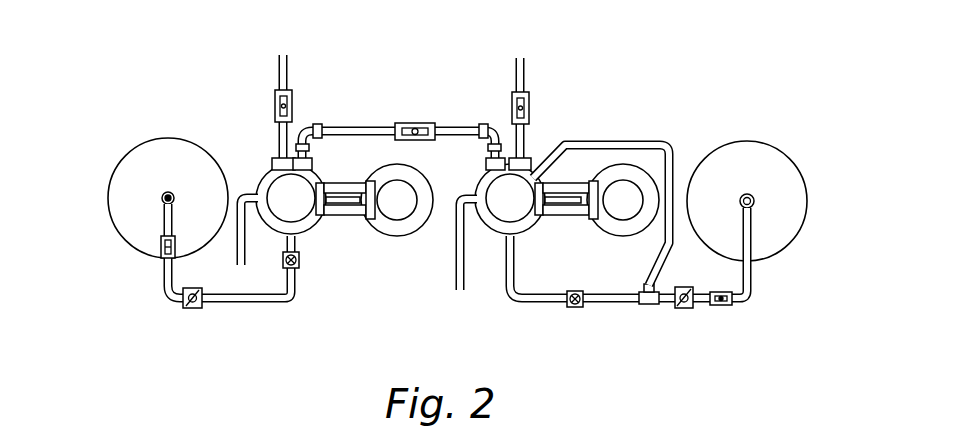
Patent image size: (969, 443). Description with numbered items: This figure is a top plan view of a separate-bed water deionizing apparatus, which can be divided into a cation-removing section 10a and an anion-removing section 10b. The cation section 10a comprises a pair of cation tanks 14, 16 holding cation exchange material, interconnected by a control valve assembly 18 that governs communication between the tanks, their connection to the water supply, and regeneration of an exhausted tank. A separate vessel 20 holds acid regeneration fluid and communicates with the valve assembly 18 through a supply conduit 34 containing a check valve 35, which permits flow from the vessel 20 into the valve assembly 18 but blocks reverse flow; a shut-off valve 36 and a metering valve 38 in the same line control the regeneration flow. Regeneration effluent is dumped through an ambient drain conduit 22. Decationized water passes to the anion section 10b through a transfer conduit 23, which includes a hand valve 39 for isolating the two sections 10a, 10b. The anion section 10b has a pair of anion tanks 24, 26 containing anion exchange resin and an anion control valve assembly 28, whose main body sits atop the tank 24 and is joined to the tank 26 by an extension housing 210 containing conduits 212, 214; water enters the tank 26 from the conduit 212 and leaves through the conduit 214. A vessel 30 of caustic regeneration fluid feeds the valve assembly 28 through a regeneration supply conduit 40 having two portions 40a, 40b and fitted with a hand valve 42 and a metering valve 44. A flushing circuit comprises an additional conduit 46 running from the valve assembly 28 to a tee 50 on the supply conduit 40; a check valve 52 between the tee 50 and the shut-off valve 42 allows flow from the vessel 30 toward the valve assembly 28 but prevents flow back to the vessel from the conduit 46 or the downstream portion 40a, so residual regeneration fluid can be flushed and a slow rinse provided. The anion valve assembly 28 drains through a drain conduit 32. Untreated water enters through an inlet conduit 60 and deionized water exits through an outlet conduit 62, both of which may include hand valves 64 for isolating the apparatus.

The cation-removing section 10a is at (226, 117).
The anion-removing section 10b is at (694, 118).
The cation tank 14 is at (301, 208).
The cation tank 16 is at (390, 236).
The control valve assembly 18 is at (299, 206).
The vessel 20 is at (136, 153).
The ambient drain conduit 22 is at (238, 247).
The transfer conduit 23 is at (365, 127).
The anion tank 24 is at (510, 223).
The anion tank 26 is at (639, 193).
The anion control valve assembly 28 is at (518, 206).
The vessel 30 is at (773, 158).
The drain conduit 32 is at (458, 272).
The supply conduit 34 is at (228, 303).
The check valve 35 is at (188, 312).
The shut-off valve 36 is at (162, 249).
The metering valve 38 is at (299, 263).
The hand valve 39 is at (428, 124).
The regeneration supply conduit 40 is at (645, 294).
The conduit portion 40a is at (528, 303).
The conduit portion 40b is at (756, 292).
The hand valve 42 is at (722, 308).
The metering valve 44 is at (572, 309).
The conduit 46 is at (612, 142).
The tee 50 is at (652, 307).
The check valve 52 is at (689, 310).
The inlet conduit 60 is at (290, 68).
The outlet conduit 62 is at (528, 72).
The hand valve 64 is at (293, 103).
The extension housing 210 is at (635, 186).
The conduit 212 is at (567, 186).
The conduit 214 is at (568, 216).